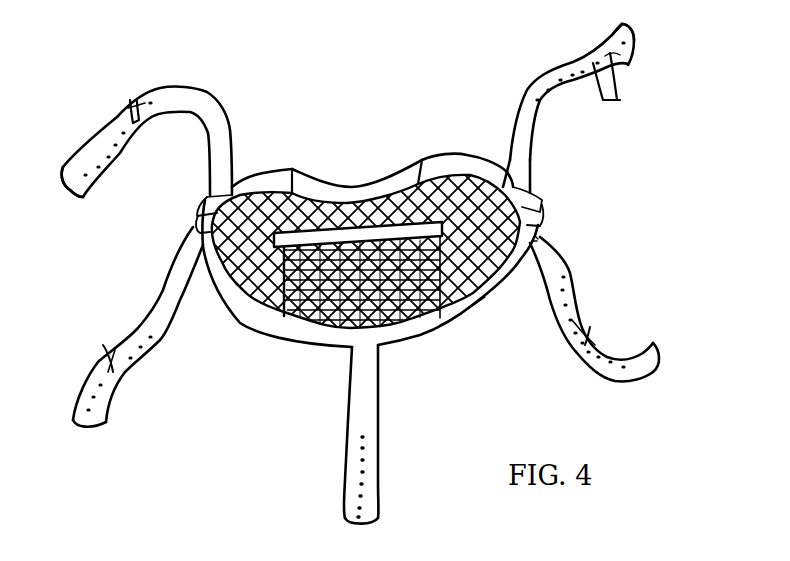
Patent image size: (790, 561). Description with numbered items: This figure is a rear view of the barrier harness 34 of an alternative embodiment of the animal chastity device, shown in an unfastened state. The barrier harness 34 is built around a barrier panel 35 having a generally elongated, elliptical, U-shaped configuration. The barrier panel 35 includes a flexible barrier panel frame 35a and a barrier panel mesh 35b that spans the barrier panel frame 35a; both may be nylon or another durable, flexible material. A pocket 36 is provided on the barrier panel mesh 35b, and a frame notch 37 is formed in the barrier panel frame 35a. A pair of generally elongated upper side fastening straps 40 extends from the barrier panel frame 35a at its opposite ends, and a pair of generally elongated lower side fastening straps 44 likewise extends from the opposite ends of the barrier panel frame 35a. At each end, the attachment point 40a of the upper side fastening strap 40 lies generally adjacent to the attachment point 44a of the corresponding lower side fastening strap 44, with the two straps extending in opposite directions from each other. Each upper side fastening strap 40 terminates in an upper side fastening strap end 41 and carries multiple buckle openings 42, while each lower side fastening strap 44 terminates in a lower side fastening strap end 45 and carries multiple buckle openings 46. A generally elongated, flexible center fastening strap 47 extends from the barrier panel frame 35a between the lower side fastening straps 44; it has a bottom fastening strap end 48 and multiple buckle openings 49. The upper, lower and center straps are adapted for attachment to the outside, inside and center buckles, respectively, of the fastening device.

The barrier harness 34 is at (293, 103).
The barrier panel 35 is at (278, 345).
The barrier panel frame 35a is at (447, 315).
The barrier panel mesh 35b is at (455, 185).
The pocket 36 is at (252, 303).
The frame notch 37 is at (333, 190).
The upper side fastening strap 40 is at (202, 104).
The attachment point of upper side fastening strap 40a is at (203, 206).
The upper side fastening strap end 41 is at (82, 192).
The buckle openings 42 is at (138, 103).
The lower side fastening strap 44 is at (167, 291).
The attachment point of lower side fastening strap 44a is at (198, 228).
The lower side fastening strap end 45 is at (87, 420).
The buckle openings 46 is at (112, 352).
The center fastening strap 47 is at (362, 417).
The bottom fastening strap end 48 is at (367, 514).
The buckle openings 49 is at (360, 447).